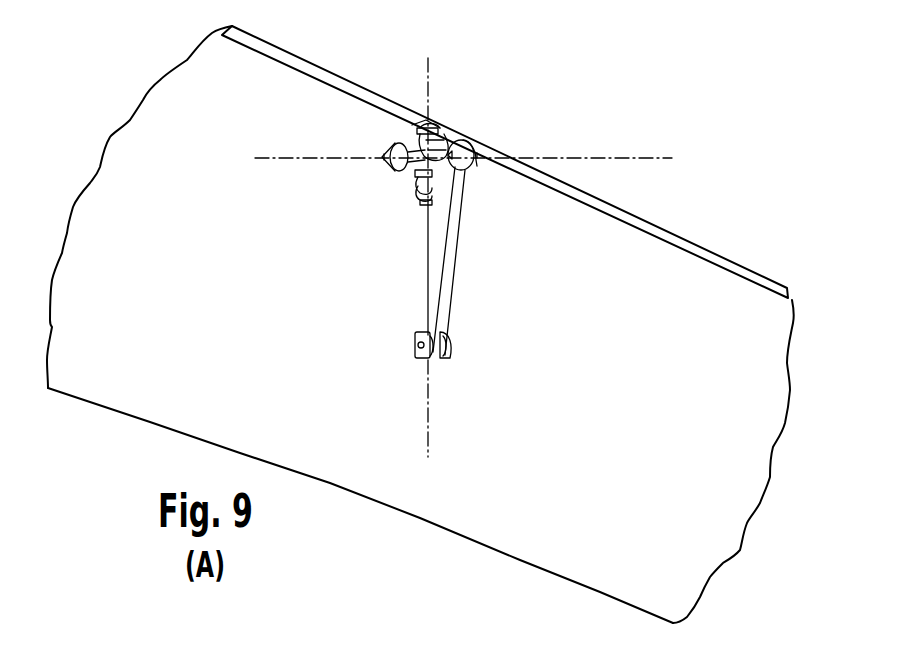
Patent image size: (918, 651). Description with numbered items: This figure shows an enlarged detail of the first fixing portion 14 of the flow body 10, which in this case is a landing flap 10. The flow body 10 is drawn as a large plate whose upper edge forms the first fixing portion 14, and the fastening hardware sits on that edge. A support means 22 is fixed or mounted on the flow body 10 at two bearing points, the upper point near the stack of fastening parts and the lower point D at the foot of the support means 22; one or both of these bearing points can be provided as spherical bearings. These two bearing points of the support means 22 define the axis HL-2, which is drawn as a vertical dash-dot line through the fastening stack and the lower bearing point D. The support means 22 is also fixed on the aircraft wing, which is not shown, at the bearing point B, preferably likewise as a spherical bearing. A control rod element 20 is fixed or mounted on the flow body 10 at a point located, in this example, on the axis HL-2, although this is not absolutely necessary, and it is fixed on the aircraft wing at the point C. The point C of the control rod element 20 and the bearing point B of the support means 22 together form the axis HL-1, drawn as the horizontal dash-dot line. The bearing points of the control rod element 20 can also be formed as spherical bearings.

The flow body 10 is at (702, 288).
The first fixing portion 14 is at (533, 162).
The control rod element 20 is at (410, 123).
The support means 22 is at (458, 267).
The bearing point B is at (480, 140).
The bearing point C is at (378, 178).
The bearing point D is at (412, 363).
The axis HL-1 is at (657, 150).
The axis HL-2 is at (428, 438).